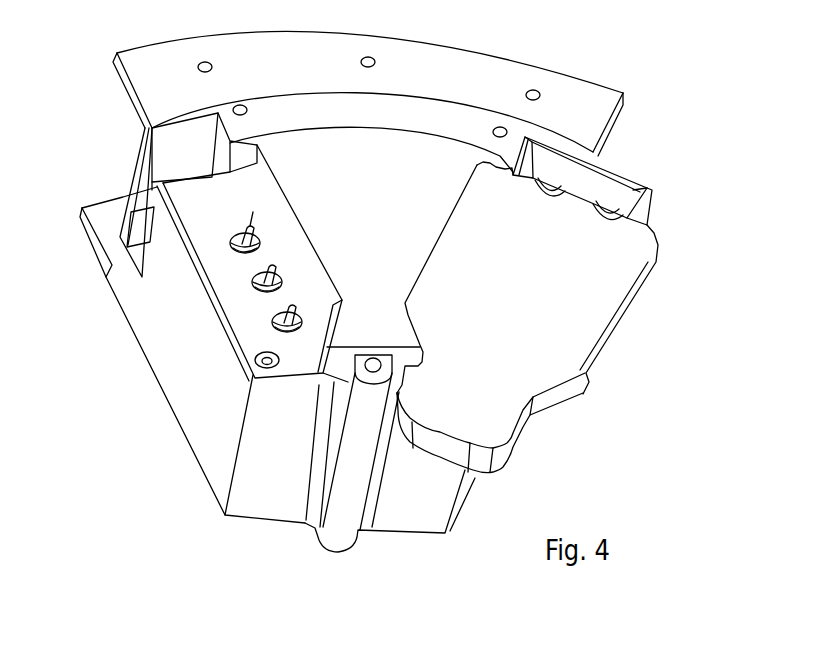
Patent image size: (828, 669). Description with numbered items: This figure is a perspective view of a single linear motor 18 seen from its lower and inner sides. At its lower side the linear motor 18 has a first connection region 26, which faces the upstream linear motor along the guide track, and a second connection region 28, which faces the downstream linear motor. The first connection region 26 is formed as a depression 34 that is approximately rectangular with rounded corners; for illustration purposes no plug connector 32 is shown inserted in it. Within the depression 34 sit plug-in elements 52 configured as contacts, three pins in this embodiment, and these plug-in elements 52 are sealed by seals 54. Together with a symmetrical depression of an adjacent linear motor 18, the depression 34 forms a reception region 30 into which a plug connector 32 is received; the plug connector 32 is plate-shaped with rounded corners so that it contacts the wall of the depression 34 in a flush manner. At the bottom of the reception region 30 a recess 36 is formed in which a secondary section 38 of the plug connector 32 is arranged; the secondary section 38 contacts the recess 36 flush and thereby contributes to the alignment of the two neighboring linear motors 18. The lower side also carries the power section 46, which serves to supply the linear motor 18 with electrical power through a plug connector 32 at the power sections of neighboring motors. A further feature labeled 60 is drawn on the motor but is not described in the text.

The linear motor 18 is at (490, 82).
The power section 46 is at (570, 93).
The first connection region 26 is at (230, 202).
The slot 60 is at (143, 212).
The depression 34 is at (257, 342).
The reception region 30 is at (307, 337).
The recess 36 is at (310, 370).
The seals 54 is at (273, 322).
The plug-in elements 52 is at (294, 305).
The second connection region 28 is at (487, 210).
The plug connector 32 is at (573, 322).
The secondary section 38 is at (463, 420).